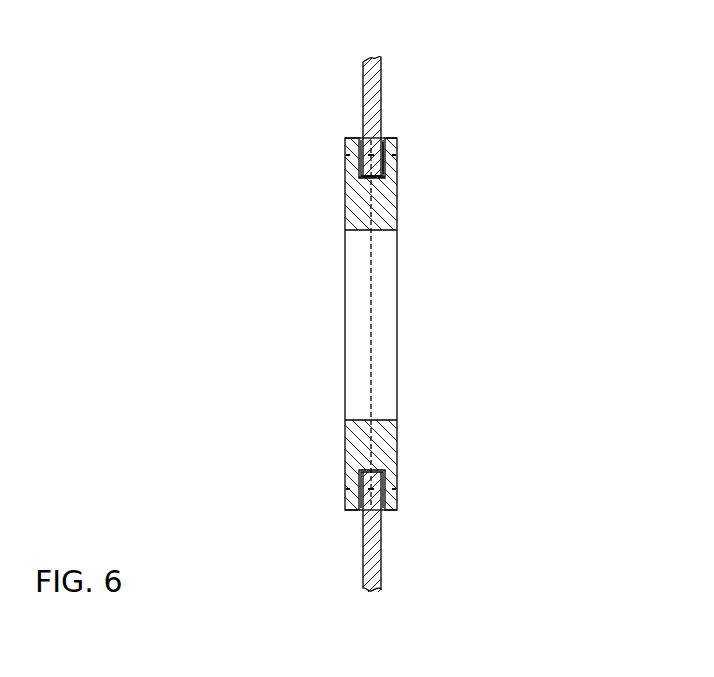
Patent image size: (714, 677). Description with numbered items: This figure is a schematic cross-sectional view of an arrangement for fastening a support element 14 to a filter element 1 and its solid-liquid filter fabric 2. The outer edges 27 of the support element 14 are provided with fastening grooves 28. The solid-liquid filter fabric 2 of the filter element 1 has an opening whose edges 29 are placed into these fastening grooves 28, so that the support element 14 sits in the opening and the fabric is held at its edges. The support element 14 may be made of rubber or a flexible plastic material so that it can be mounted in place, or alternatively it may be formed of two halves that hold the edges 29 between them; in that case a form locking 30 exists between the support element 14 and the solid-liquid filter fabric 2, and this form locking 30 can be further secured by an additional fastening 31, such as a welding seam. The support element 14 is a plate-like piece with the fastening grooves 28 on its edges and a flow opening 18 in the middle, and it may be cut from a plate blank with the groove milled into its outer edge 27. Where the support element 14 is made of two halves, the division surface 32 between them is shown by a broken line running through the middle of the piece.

The filter element 1 is at (236, 98).
The solid-liquid filter fabric 2 is at (380, 83).
The support element 14 is at (214, 212).
The flow opening 18 is at (381, 303).
The outer edge 27 is at (352, 512).
The fastening groove 28 is at (386, 140).
The edge of the opening 29 is at (370, 178).
The form locking 30 is at (323, 137).
The additional fastening 31 is at (384, 162).
The division surface 32 is at (370, 373).